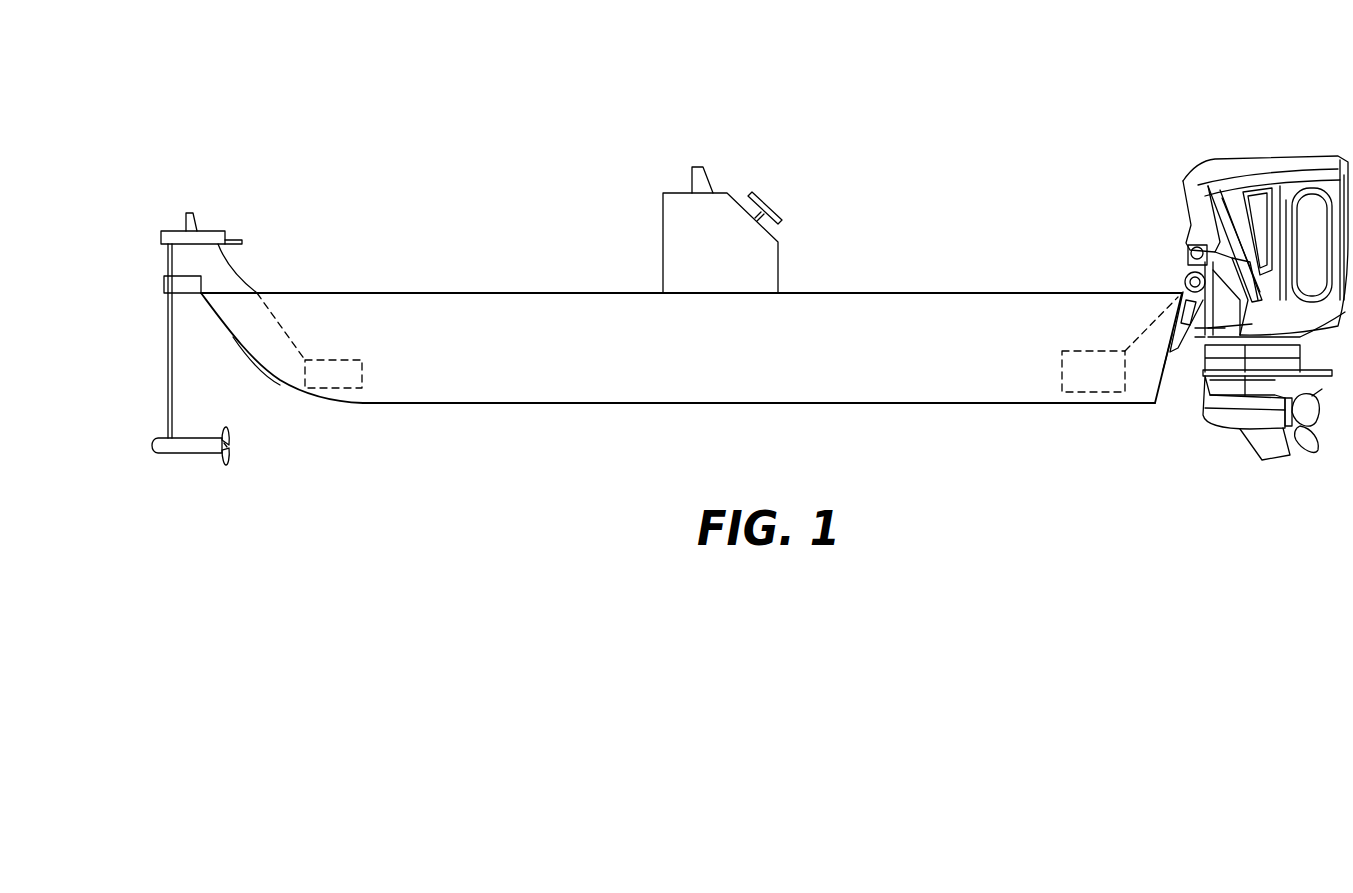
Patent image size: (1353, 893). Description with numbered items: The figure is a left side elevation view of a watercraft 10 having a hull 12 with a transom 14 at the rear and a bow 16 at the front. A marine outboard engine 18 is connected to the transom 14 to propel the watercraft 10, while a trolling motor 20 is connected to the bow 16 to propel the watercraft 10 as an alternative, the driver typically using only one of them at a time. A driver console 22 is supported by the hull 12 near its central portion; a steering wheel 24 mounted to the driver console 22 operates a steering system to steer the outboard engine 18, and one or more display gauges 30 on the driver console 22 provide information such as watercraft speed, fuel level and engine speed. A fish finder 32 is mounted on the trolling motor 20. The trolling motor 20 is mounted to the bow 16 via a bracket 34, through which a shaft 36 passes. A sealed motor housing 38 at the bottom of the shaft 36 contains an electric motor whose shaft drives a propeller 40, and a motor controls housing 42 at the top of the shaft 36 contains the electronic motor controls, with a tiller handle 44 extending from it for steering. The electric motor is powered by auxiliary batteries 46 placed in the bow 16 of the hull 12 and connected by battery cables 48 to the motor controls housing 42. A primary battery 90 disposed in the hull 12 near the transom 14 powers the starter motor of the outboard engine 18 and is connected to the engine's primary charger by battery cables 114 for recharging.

The watercraft 10 is at (491, 150).
The hull 12 is at (609, 375).
The transom 14 is at (1157, 385).
The bow 16 is at (263, 367).
The marine outboard engine 18 is at (1311, 204).
The trolling motor 20 is at (141, 244).
The driver console 22 is at (693, 215).
The steering wheel 24 is at (775, 207).
The display gauges 30 is at (710, 190).
The fish finder 32 is at (193, 212).
The bracket 34 is at (166, 285).
The shaft 36 is at (168, 387).
The motor housing 38 is at (170, 451).
The propeller 40 is at (223, 467).
The motor controls housing 42 is at (173, 231).
The tiller handle 44 is at (231, 242).
The auxiliary batteries 46 is at (330, 374).
The battery cables 48 is at (234, 270).
The primary battery 90 is at (1078, 370).
The battery cables 114 is at (1137, 333).